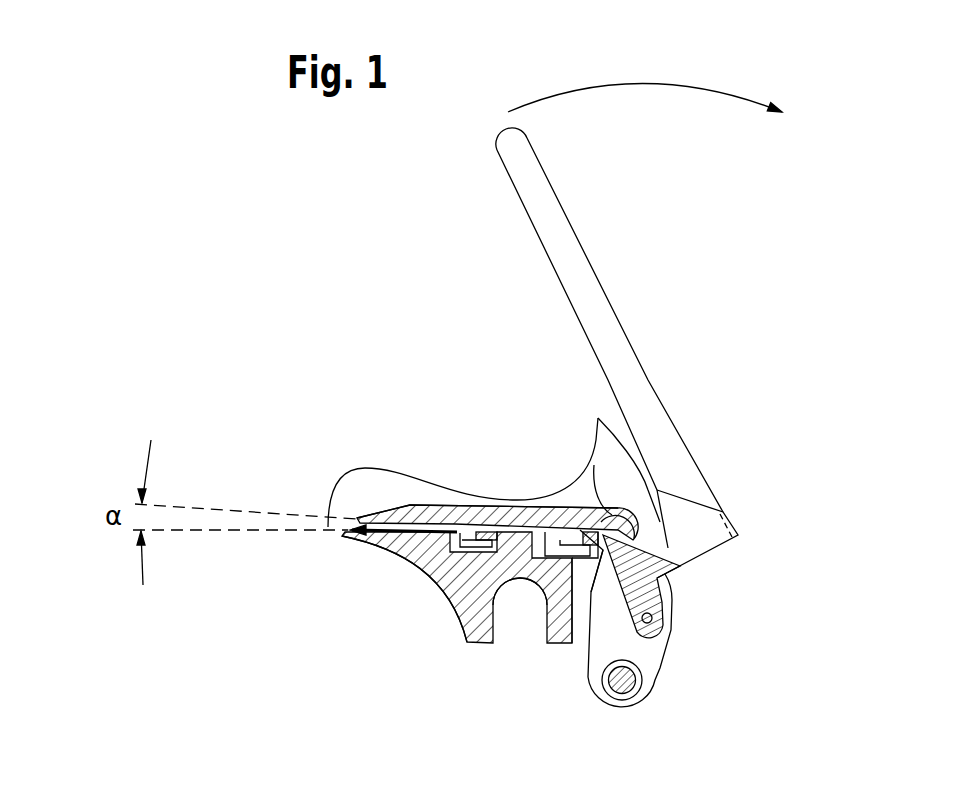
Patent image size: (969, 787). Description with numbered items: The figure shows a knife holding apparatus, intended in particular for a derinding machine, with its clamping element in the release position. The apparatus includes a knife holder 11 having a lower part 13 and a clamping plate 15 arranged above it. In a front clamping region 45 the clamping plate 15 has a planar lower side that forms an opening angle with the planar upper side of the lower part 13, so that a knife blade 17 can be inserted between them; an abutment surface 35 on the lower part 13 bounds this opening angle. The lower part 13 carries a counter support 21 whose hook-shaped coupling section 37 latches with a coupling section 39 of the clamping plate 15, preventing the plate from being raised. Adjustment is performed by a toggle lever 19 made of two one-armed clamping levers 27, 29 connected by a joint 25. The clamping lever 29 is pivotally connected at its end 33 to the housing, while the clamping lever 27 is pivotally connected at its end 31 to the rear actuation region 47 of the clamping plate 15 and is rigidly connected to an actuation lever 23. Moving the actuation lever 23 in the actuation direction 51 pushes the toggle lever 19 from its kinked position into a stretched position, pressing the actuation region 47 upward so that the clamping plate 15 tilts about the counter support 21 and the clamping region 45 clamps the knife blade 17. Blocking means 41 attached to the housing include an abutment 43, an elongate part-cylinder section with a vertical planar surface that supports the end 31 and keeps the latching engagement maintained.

The knife holder 11 is at (354, 580).
The lower part 13 is at (464, 622).
The clamping plate 15 is at (377, 520).
The knife blade 17 is at (331, 526).
The toggle lever 19 is at (680, 642).
The counter support 21 is at (485, 532).
The actuation lever 23 is at (558, 223).
The joint 25 is at (652, 618).
The clamping lever 27 is at (655, 592).
The clamping lever 29 is at (647, 655).
The end 31 is at (614, 533).
The end 33 is at (627, 688).
The abutment surface 35 is at (512, 532).
The coupling section 37 is at (486, 536).
The coupling section 39 is at (442, 590).
The blocking means 41 is at (653, 540).
The abutment 43 is at (594, 465).
The clamping region 45 is at (352, 532).
The actuation region 47 is at (600, 580).
The actuation direction 51 is at (606, 82).